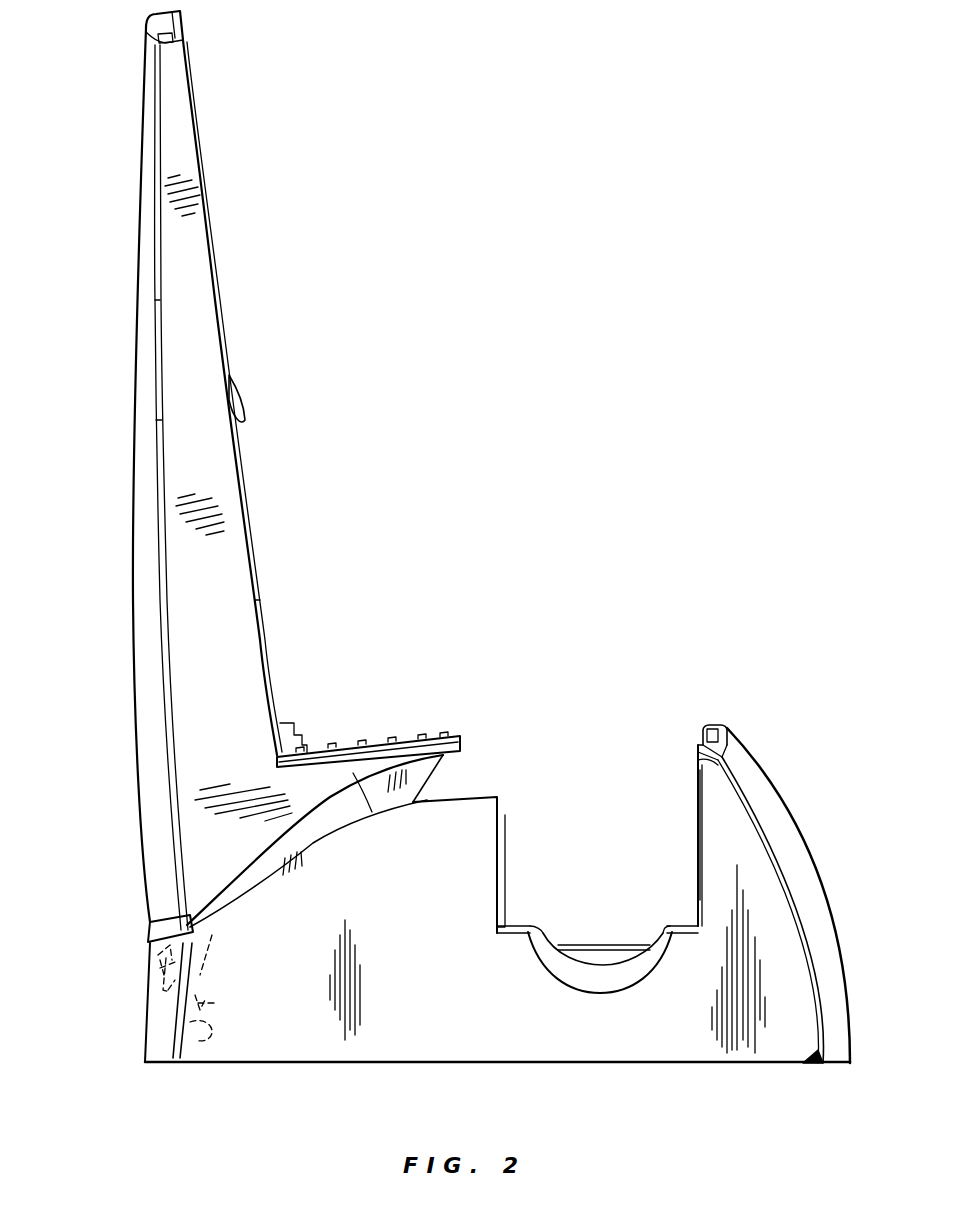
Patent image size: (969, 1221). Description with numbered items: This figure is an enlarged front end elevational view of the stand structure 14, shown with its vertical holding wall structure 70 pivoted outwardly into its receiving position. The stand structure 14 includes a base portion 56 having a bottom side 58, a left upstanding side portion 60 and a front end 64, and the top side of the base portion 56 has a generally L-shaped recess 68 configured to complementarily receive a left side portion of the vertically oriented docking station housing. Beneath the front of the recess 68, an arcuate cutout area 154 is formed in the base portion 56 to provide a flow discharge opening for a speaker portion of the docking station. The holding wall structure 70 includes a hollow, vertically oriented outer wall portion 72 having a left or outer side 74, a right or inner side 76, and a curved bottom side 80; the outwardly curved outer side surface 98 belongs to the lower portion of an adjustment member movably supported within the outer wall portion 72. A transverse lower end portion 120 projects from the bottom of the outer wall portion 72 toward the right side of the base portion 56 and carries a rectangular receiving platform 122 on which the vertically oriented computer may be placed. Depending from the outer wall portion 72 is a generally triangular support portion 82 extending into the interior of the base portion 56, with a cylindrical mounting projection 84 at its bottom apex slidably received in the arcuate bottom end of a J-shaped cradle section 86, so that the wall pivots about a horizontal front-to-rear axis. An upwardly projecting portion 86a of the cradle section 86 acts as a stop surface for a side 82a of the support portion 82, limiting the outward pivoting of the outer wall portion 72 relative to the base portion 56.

The stand structure 14 is at (420, 293).
The vertical holding wall structure 70 is at (131, 330).
The outer wall portion 72 is at (153, 470).
The left or outer side 74 is at (132, 630).
The right or inner side 76 is at (262, 600).
The outwardly curved outer side surface 98 is at (244, 408).
The rectangular receiving platform 122 is at (373, 740).
The transverse lower end portion 120 is at (353, 773).
The curved bottom side 80 is at (306, 820).
The L-shaped recess 68 is at (600, 836).
The base portion 56 is at (814, 848).
The front end 64 is at (410, 980).
The left upstanding side portion 60 is at (145, 1018).
The bottom side 58 is at (693, 1063).
The arcuate cutout area 154 is at (568, 987).
The triangularly shaped support portion 82 is at (215, 985).
The side of triangular support portion 82a is at (155, 970).
The cylindrical mounting projection 84 is at (200, 1008).
The J-shaped cradle section 86 is at (185, 1040).
The upwardly projecting portion of cradle section 86a is at (200, 975).